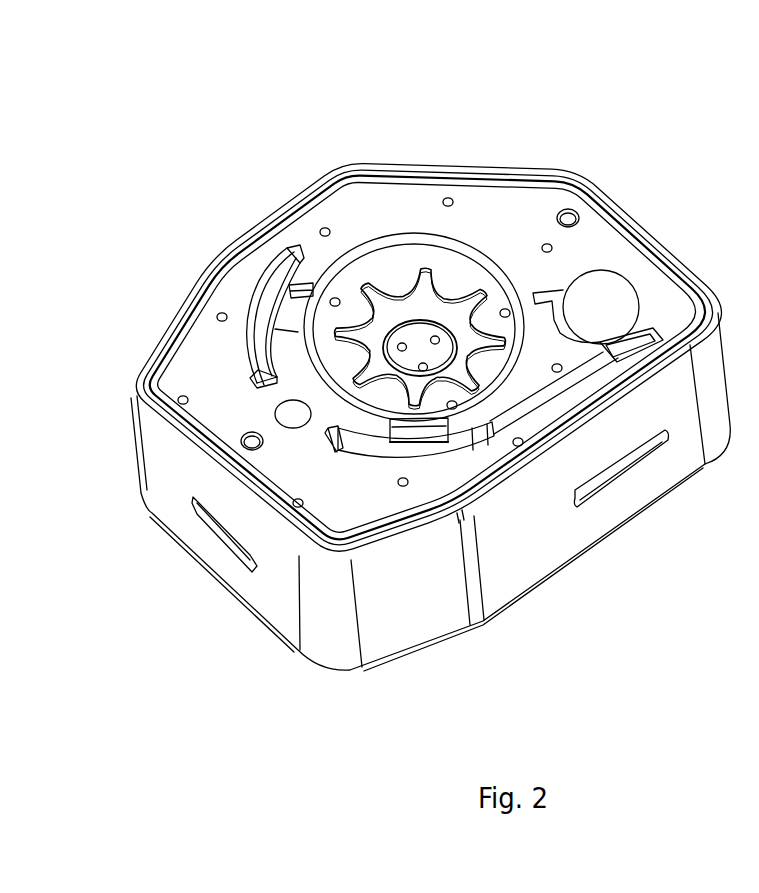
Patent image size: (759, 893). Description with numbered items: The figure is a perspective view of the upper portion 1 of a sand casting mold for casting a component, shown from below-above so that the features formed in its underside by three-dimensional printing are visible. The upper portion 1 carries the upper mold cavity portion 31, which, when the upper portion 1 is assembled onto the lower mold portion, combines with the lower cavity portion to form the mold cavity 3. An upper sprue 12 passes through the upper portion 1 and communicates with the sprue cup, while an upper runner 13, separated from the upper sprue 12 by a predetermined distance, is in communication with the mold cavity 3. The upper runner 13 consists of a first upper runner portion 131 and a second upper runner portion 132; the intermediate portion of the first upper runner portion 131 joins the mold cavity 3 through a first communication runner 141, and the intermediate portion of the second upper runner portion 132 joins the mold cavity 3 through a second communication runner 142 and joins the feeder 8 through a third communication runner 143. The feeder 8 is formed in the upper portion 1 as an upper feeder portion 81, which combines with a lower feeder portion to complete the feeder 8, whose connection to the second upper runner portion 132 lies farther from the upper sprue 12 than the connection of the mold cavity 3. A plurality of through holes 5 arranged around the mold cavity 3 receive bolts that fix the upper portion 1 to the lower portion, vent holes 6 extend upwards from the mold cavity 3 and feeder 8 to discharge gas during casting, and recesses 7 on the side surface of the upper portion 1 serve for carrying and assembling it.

The upper portion 1 is at (404, 373).
The mold cavity 3 is at (431, 254).
The through holes 5 is at (323, 227).
The vent holes 6 is at (437, 343).
The recesses 7 is at (616, 470).
The feeder 8 is at (646, 359).
The upper sprue 12 is at (297, 400).
The upper runner 13 is at (196, 503).
The upper mold cavity portion 31 is at (447, 272).
The upper feeder portion 81 is at (646, 359).
The first upper runner portion 131 is at (258, 382).
The second upper runner portion 132 is at (337, 433).
The first communication runner 141 is at (292, 312).
The second communication runner 142 is at (417, 430).
The third communication runner 143 is at (612, 347).